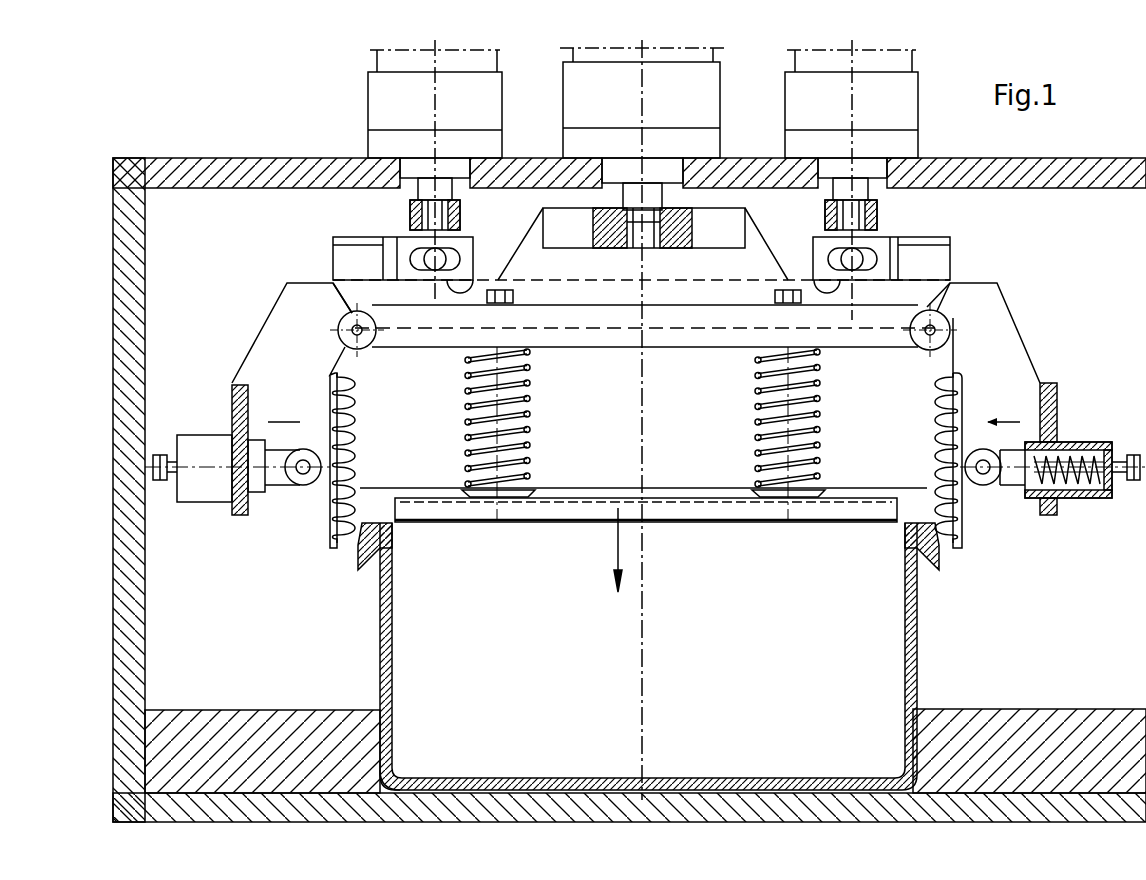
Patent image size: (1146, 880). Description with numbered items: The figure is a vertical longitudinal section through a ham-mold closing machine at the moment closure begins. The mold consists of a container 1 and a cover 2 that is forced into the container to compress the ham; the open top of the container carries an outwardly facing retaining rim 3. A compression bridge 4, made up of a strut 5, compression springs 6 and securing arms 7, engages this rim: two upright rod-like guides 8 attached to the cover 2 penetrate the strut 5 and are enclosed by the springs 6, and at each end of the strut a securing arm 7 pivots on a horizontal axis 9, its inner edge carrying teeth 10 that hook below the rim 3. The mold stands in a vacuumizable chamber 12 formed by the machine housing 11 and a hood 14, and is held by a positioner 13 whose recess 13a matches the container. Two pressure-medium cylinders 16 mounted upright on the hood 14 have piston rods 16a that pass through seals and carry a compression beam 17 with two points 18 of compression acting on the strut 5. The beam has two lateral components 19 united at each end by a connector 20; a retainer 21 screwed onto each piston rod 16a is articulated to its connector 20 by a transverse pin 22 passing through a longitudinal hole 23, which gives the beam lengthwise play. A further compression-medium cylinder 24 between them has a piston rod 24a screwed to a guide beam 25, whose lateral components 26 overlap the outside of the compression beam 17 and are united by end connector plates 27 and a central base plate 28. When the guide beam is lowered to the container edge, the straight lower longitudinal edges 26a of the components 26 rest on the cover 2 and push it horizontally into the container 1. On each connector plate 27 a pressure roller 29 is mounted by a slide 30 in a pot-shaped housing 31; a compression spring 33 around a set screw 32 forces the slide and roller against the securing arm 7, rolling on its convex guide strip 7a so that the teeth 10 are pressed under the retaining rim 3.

The container 1 is at (383, 640).
The cover 2 is at (561, 508).
The retaining rim 3 is at (368, 533).
The compression bridge 4 is at (679, 322).
The strut 5 is at (598, 318).
The compression springs 6 is at (528, 440).
The securing arms 7 is at (657, 471).
The guide strip 7a is at (330, 405).
The rod-like guides 8 is at (470, 393).
The horizontal axis 9 is at (352, 336).
The teeth 10 is at (358, 450).
The housing 11 is at (135, 660).
The chamber 12 is at (970, 645).
The positioner 13 is at (252, 738).
The recess 13a is at (395, 770).
The hood 14 is at (215, 177).
The pressure-medium cylinders 16 is at (393, 94).
The piston rods 16a is at (423, 165).
The compression beam 17 is at (348, 301).
The points of compression 18 is at (498, 280).
The lateral components 19 is at (932, 304).
The connector 20 is at (372, 258).
The retainer 21 is at (408, 215).
The transverse pins 22 is at (832, 257).
The longitudinal hole 23 is at (837, 243).
The compression-medium cylinder 24 is at (593, 103).
The piston rod 24a is at (625, 168).
The guide beam 25 is at (262, 328).
The lateral components 26 is at (1015, 358).
The lower longitudinal edges 26a is at (676, 480).
The connector plates 27 is at (240, 513).
The base plate 28 is at (570, 228).
The pressure roller 29 is at (305, 487).
The slide 30 is at (283, 475).
The pot-shaped housing 31 is at (202, 488).
The set screw 32 is at (160, 455).
The compression spring 33 is at (1090, 482).